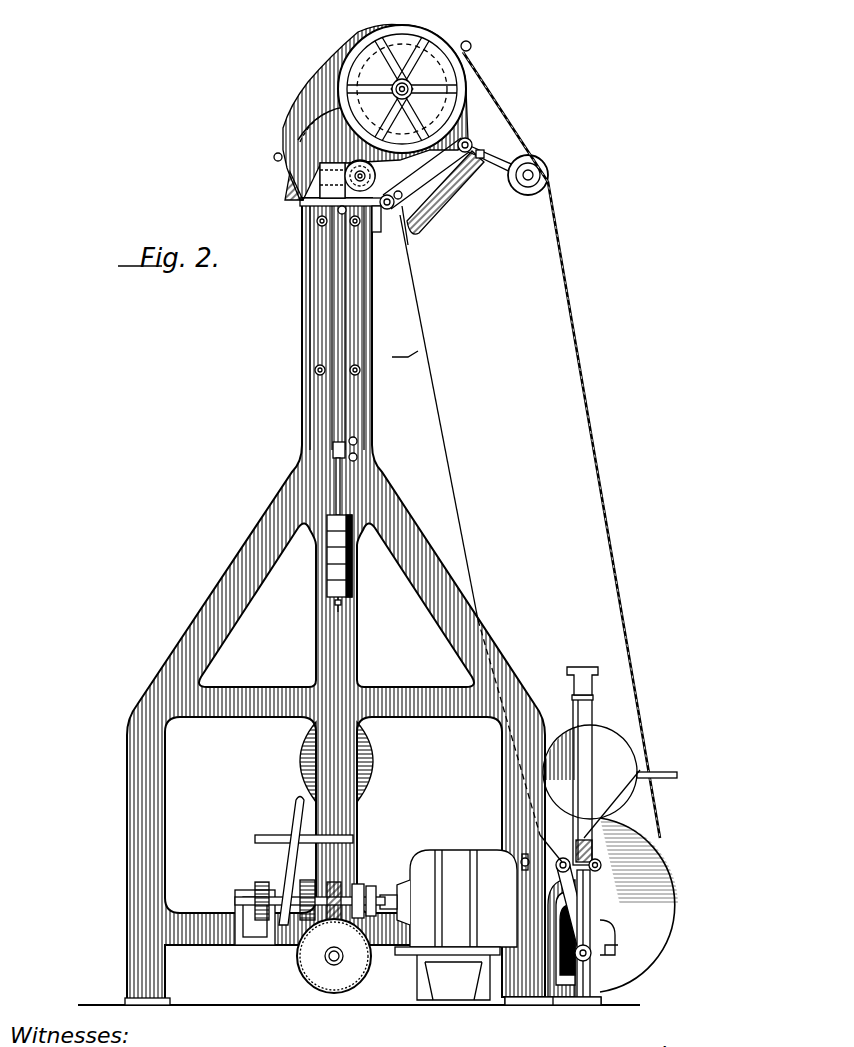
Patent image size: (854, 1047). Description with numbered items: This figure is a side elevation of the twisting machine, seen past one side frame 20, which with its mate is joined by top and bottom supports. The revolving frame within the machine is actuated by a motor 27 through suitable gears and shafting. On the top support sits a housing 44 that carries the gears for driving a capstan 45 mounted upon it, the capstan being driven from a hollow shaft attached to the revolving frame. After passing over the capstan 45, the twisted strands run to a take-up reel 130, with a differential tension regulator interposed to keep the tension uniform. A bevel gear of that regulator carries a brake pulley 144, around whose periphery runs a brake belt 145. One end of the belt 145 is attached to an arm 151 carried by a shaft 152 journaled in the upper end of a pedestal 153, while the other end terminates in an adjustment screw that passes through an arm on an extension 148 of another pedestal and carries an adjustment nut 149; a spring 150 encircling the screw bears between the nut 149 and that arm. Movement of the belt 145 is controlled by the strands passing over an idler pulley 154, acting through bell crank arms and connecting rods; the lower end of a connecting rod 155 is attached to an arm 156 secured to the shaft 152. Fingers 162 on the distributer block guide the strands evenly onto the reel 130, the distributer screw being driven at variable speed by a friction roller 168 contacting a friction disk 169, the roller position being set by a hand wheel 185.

The side frame 20 is at (232, 580).
The motor 27 is at (425, 870).
The housing 44 is at (323, 96).
The capstan 45 is at (436, 40).
The take-up reel 130 is at (667, 912).
The brake pulley 144 is at (594, 882).
The brake belt 145 is at (550, 870).
The extension of the pedestal 148 is at (617, 872).
The adjustment nut 149 is at (576, 858).
The spring 150 is at (601, 864).
The arm 151 is at (557, 857).
The shaft 152 is at (640, 770).
The pedestal 153 is at (584, 992).
The idler pulley 154 is at (549, 170).
The connecting rod 155 is at (457, 508).
The arm 156 is at (556, 861).
The fingers 162 is at (663, 774).
The friction roller 168 is at (586, 746).
The friction disk 169 is at (617, 756).
The hand wheel 185 is at (583, 667).